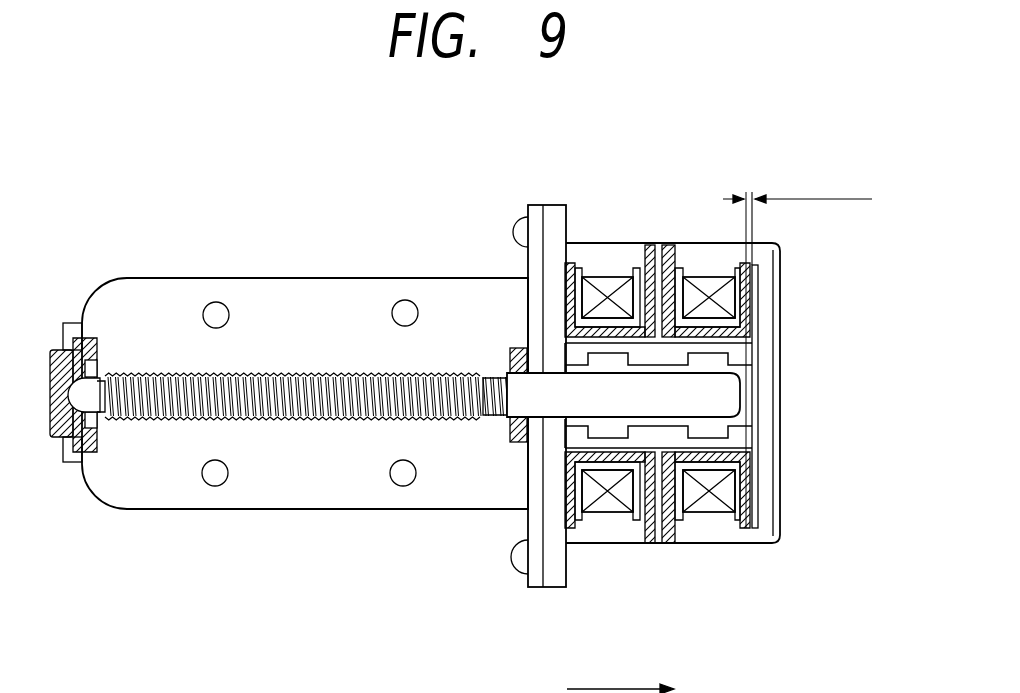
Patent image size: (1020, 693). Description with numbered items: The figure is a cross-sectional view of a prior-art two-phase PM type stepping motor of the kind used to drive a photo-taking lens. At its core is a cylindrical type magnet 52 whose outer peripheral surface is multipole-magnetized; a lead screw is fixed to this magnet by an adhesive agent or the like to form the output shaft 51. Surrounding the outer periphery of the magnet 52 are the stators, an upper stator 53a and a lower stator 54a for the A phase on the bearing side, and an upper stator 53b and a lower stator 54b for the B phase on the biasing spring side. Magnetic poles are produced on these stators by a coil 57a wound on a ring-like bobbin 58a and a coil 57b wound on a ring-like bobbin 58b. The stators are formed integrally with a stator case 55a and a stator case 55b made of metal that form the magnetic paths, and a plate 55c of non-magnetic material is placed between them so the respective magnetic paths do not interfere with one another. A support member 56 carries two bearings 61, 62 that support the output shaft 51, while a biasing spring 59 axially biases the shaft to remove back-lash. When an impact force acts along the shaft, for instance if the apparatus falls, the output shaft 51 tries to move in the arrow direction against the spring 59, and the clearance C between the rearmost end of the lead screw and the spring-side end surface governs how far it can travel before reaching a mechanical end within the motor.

The output shaft 51 is at (137, 421).
The cylindrical type magnet 52 is at (748, 367).
The upper stator 53a is at (565, 548).
The upper stator 53b is at (672, 523).
The lower stator 54a is at (645, 517).
The lower stator 54b is at (750, 524).
The stator case 55a is at (555, 588).
The stator case 55b is at (774, 461).
The plate 55c is at (657, 247).
The support member 56 is at (265, 490).
The coil 57a is at (607, 278).
The coil 57b is at (700, 278).
The bobbin 58a is at (583, 268).
The bobbin 58b is at (759, 283).
The biasing spring 59 is at (748, 398).
The bearing 61 is at (49, 440).
The bearing 62 is at (518, 441).
The clearance C is at (797, 209).